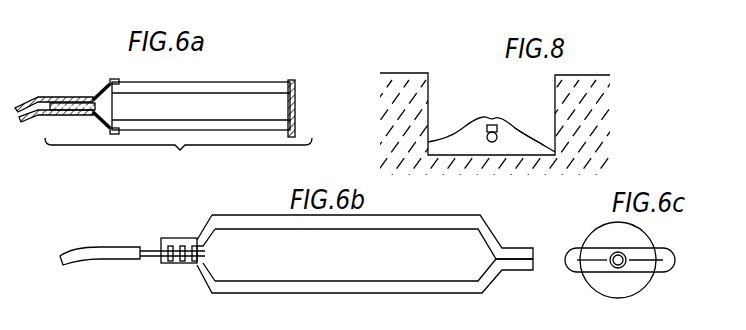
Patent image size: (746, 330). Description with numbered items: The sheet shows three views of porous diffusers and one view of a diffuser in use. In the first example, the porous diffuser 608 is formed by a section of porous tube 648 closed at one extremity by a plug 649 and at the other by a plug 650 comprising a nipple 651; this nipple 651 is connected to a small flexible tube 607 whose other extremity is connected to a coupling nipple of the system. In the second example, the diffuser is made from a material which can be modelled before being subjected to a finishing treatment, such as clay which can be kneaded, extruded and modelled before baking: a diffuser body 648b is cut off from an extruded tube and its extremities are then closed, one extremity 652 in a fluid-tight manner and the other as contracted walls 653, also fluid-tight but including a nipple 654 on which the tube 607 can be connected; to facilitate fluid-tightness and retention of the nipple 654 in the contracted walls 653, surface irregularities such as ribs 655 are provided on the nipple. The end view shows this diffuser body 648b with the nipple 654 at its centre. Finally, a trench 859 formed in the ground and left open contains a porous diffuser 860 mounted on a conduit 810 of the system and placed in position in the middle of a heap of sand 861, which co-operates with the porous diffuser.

In FIG. 6A, the porous tube 648 is at (197, 90).
In FIG. 6A, the plug 649 is at (293, 111).
In FIG. 6A, the plug 650 is at (103, 97).
In FIG. 6A, the nipple 651 is at (80, 99).
In FIG. 6A, the small flexible tube 607 is at (33, 116).
In FIG. 6B, the small flexible tube 607 is at (79, 258).
In FIG. 6A, the porous diffuser 608 is at (178, 156).
In FIG. 8, the trench 859 is at (463, 90).
In FIG. 8, the conduit 810 is at (477, 128).
In FIG. 8, the porous diffuser 860 is at (489, 123).
In FIG. 8, the heap of sand 861 is at (515, 142).
In FIG. 6B, the diffuser body 648b is at (361, 222).
In FIG. 6C, the diffuser body 648b is at (607, 232).
In FIG. 6B, the fluid-tight closed extremity 652 is at (522, 262).
In FIG. 6B, the ribs 655 is at (167, 240).
In FIG. 6B, the nipple 654 is at (156, 258).
In FIG. 6C, the nipple 654 is at (618, 266).
In FIG. 6B, the contracted walls 653 is at (188, 264).